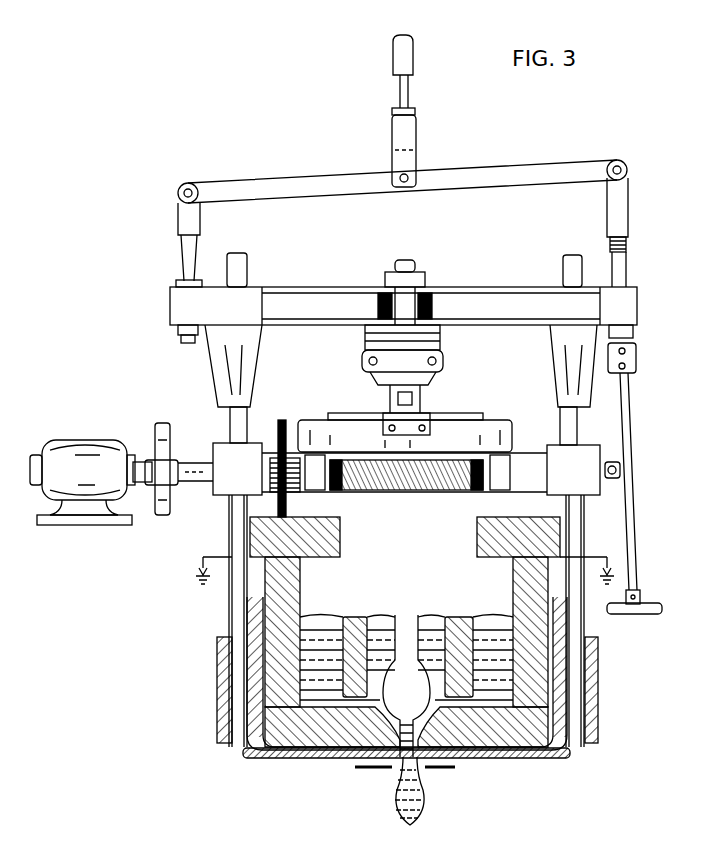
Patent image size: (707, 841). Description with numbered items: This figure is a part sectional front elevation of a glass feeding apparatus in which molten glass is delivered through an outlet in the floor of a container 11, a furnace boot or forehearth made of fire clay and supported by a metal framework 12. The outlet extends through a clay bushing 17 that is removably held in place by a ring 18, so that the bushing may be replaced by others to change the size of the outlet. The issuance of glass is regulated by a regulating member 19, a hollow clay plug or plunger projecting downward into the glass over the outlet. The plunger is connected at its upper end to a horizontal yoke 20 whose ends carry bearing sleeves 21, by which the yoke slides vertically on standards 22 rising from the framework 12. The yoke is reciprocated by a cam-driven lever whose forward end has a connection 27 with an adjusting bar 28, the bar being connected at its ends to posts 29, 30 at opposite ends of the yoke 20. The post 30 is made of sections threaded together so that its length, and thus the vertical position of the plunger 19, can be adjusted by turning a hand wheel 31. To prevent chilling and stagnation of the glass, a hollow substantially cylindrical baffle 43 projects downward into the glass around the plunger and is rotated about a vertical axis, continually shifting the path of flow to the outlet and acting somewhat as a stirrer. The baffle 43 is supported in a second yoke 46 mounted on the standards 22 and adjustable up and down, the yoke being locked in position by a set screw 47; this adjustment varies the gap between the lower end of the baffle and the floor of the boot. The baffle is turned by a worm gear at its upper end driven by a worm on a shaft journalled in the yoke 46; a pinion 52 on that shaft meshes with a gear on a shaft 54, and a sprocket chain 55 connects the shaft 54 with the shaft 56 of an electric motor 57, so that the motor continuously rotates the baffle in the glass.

The container 11 is at (575, 632).
The metal framework 12 is at (280, 760).
The clay bushing 17 is at (412, 770).
The ring 18 is at (345, 760).
The regulating member 19 is at (418, 620).
The horizontal yoke 20 is at (511, 287).
The bearing sleeves 21 is at (216, 373).
The standards 22 is at (580, 425).
The connection 27 is at (408, 95).
The adjusting bar 28 is at (540, 165).
The post 29 is at (198, 241).
The post 30 is at (630, 228).
The hand wheel 31 is at (652, 605).
The baffle 43 is at (462, 594).
The yoke 46 is at (547, 447).
The set screw 47 is at (622, 468).
The pinion 52 is at (280, 437).
The shaft 54 is at (190, 483).
The sprocket chain 55 is at (170, 447).
The motor shaft 56 is at (140, 462).
The electric motor 57 is at (100, 440).